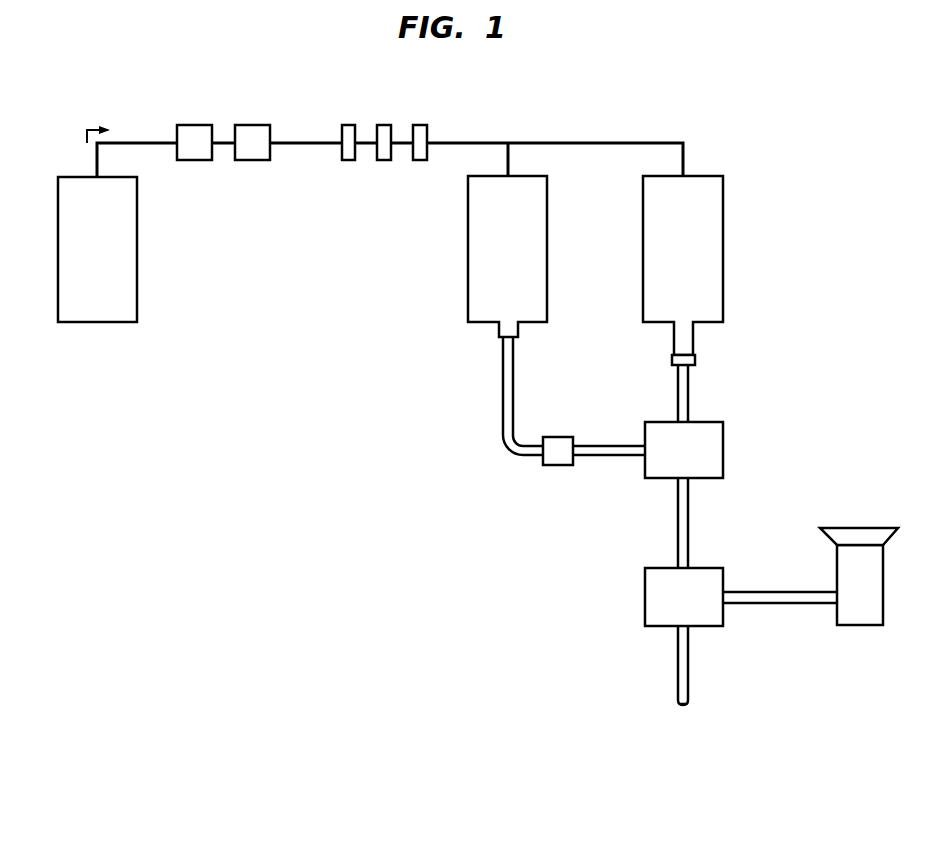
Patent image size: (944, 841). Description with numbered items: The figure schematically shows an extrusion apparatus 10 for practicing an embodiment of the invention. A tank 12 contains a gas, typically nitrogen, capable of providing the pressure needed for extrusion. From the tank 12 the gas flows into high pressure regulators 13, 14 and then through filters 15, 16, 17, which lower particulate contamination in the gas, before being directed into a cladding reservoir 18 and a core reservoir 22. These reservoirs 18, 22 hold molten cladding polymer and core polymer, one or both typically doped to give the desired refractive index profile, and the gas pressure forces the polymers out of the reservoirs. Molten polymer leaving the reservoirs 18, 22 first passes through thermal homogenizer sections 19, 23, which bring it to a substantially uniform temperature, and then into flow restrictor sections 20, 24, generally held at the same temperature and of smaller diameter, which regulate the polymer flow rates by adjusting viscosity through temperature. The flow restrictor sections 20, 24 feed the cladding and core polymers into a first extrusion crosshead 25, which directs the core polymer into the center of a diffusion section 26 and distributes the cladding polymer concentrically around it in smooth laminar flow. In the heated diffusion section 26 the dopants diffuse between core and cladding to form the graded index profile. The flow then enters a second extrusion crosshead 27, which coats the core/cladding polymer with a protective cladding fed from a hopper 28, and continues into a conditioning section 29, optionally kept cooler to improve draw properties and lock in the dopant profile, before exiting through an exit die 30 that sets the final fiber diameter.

The extrusion apparatus 10 is at (823, 788).
The tank 12 is at (58, 323).
The high pressure regulator 13 is at (195, 161).
The high pressure regulator 14 is at (253, 161).
The filter 15 is at (348, 161).
The filter 16 is at (384, 161).
The filter 17 is at (420, 161).
The cladding reservoir 18 is at (468, 323).
The thermal homogenizer section 19 is at (503, 442).
The flow restrictor section 20 is at (597, 446).
The core reservoir 22 is at (643, 323).
The thermal homogenizer section 23 is at (672, 356).
The flow restrictor section 24 is at (678, 400).
The first extrusion crosshead 25 is at (645, 478).
The diffusion section 26 is at (678, 530).
The second extrusion crosshead 27 is at (645, 626).
The hopper 28 is at (837, 625).
The conditioning section 29 is at (678, 675).
The exit die 30 is at (684, 706).